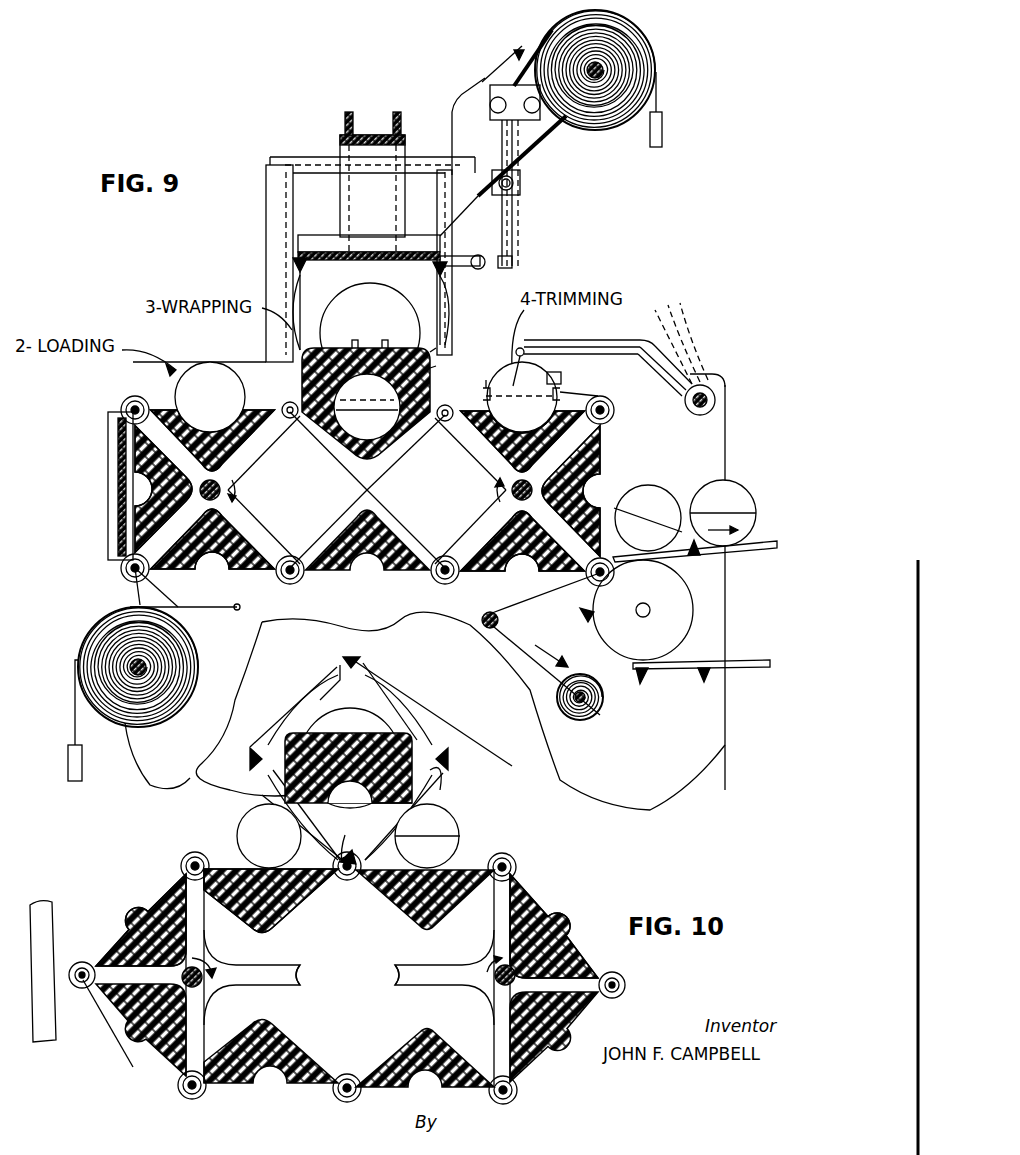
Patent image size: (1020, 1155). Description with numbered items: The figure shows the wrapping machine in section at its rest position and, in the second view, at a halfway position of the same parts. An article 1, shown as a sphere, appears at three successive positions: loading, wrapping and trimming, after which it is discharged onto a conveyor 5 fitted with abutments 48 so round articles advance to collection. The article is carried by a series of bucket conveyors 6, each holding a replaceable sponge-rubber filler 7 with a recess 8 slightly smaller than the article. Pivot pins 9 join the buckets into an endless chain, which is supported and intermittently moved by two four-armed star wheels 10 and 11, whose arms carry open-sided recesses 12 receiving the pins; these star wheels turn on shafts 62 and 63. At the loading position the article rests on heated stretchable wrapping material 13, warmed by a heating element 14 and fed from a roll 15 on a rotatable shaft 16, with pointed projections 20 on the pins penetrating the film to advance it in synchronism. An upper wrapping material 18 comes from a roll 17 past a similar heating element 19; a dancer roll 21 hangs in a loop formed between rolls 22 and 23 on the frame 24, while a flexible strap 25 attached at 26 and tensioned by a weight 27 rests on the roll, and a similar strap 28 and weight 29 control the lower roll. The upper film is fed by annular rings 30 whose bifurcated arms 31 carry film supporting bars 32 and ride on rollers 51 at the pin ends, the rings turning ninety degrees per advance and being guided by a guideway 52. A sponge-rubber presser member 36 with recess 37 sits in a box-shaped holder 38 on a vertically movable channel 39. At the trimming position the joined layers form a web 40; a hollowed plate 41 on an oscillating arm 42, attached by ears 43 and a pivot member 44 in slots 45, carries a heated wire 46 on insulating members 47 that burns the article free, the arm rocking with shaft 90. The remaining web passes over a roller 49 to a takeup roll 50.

In FIG. 9, the article 1 is at (215, 375).
In FIG. 10, the article 1 is at (252, 840).
In FIG. 9, the conveyor 5 is at (768, 542).
In FIG. 9, the bucket conveyor 6 is at (255, 455).
In FIG. 9, the replaceable filler 7 is at (130, 437).
In FIG. 10, the replaceable filler 7 is at (175, 890).
In FIG. 9, the recess 8 is at (168, 412).
In FIG. 10, the recess 8 is at (148, 918).
In FIG. 9, the pivot pin 9 is at (124, 570).
In FIG. 10, the pivot pin 9 is at (195, 858).
In FIG. 9, the star wheel 10 is at (248, 520).
In FIG. 10, the star wheel 10 is at (258, 968).
In FIG. 9, the star wheel 11 is at (480, 520).
In FIG. 10, the star wheel 11 is at (440, 970).
In FIG. 10, the open-sided recess 12 is at (302, 978).
In FIG. 9, the wrapping material 13 is at (130, 400).
In FIG. 9, the heating element 14 is at (116, 470).
In FIG. 10, the heating element 14 is at (45, 900).
In FIG. 9, the roll 15 is at (180, 645).
In FIG. 9, the rotatable shaft 16 is at (134, 674).
In FIG. 9, the roll 17 is at (640, 70).
In FIG. 9, the wrapping material 18 is at (515, 178).
In FIG. 10, the wrapping material 18 is at (432, 715).
In FIG. 9, the heating element 19 is at (352, 250).
In FIG. 10, the pointed projections 20 is at (82, 962).
In FIG. 9, the dancer roll 21 is at (515, 190).
In FIG. 9, the roll 22 is at (514, 120).
In FIG. 9, the roll 23 is at (492, 100).
In FIG. 9, the frame 24 is at (540, 140).
In FIG. 9, the flexible strap 25 is at (640, 30).
In FIG. 9, the attachment point 26 is at (514, 50).
In FIG. 9, the weight 27 is at (663, 130).
In FIG. 9, the strap 28 is at (76, 660).
In FIG. 9, the weight 29 is at (68, 760).
In FIG. 9, the annular ring 30 is at (294, 300).
In FIG. 10, the annular ring 30 is at (338, 672).
In FIG. 9, the arm 31 is at (297, 278).
In FIG. 10, the arm 31 is at (442, 782).
In FIG. 9, the film supporting bar 32 is at (294, 262).
In FIG. 10, the film supporting bar 32 is at (352, 658).
In FIG. 9, the presser member 36 is at (432, 366).
In FIG. 10, the presser member 36 is at (350, 745).
In FIG. 9, the recess 37 is at (302, 380).
In FIG. 10, the recess 37 is at (400, 806).
In FIG. 9, the holder 38 is at (432, 352).
In FIG. 10, the holder 38 is at (405, 735).
In FIG. 9, the channel 39 is at (357, 340).
In FIG. 9, the web 40 is at (568, 396).
In FIG. 9, the plate 41 is at (560, 376).
In FIG. 9, the oscillating arm 42 is at (684, 318).
In FIG. 9, the ears 43 is at (582, 337).
In FIG. 9, the pivot member 44 is at (525, 350).
In FIG. 9, the slots 45 is at (519, 347).
In FIG. 9, the wire 46 is at (484, 396).
In FIG. 9, the insulating members 47 is at (472, 377).
In FIG. 9, the abutments 48 is at (690, 556).
In FIG. 9, the roller 49 is at (500, 620).
In FIG. 9, the takeup roll 50 is at (604, 702).
In FIG. 9, the rollers 51 is at (614, 410).
In FIG. 10, the rollers 51 is at (183, 862).
In FIG. 9, the guideway 52 is at (296, 226).
In FIG. 9, the shaft 62 is at (510, 486).
In FIG. 10, the shaft 62 is at (495, 985).
In FIG. 9, the shaft 63 is at (226, 486).
In FIG. 10, the shaft 63 is at (205, 987).
In FIG. 9, the shaft 90 is at (716, 400).